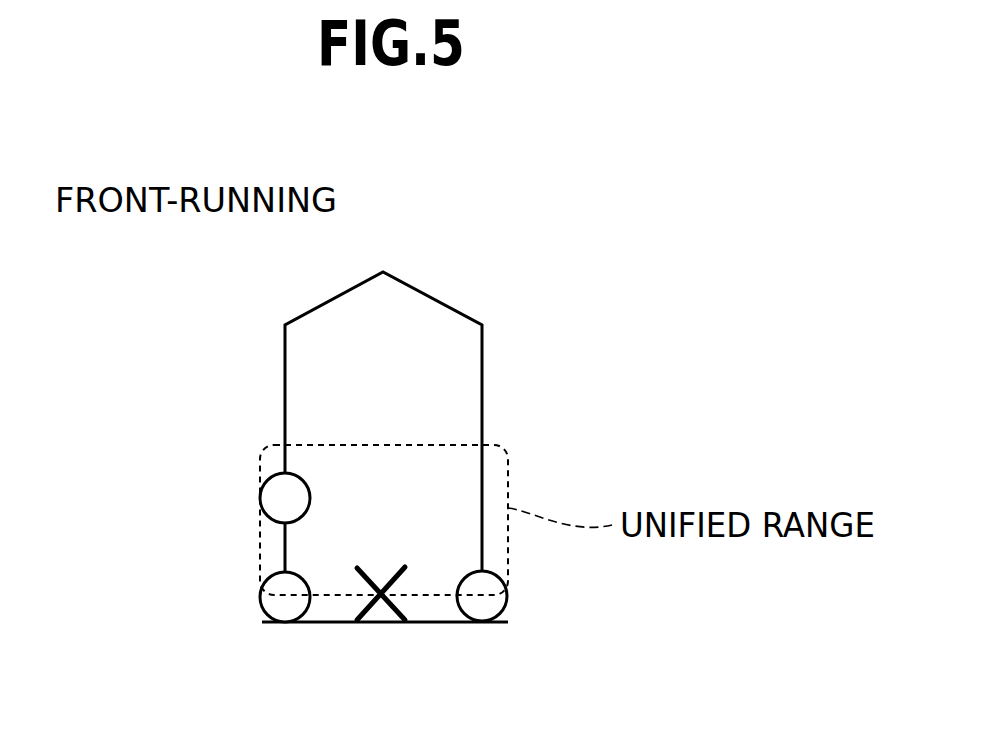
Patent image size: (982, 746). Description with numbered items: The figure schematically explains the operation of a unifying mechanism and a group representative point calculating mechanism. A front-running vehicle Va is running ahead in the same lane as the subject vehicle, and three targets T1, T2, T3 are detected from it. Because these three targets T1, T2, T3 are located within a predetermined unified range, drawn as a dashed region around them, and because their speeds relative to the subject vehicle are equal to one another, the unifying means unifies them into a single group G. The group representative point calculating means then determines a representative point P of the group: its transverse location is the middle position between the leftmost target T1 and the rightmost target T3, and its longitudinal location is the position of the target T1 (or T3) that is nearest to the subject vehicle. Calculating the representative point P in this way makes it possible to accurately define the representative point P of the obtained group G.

The front-running vehicle Va is at (327, 328).
The group G is at (443, 490).
The target T1 is at (270, 612).
The target T2 is at (270, 500).
The target T3 is at (495, 602).
The representative point P is at (395, 620).